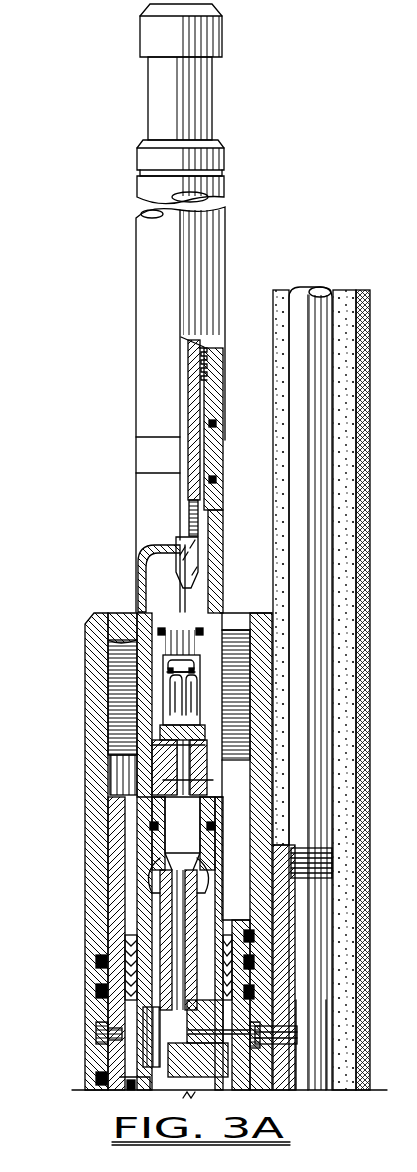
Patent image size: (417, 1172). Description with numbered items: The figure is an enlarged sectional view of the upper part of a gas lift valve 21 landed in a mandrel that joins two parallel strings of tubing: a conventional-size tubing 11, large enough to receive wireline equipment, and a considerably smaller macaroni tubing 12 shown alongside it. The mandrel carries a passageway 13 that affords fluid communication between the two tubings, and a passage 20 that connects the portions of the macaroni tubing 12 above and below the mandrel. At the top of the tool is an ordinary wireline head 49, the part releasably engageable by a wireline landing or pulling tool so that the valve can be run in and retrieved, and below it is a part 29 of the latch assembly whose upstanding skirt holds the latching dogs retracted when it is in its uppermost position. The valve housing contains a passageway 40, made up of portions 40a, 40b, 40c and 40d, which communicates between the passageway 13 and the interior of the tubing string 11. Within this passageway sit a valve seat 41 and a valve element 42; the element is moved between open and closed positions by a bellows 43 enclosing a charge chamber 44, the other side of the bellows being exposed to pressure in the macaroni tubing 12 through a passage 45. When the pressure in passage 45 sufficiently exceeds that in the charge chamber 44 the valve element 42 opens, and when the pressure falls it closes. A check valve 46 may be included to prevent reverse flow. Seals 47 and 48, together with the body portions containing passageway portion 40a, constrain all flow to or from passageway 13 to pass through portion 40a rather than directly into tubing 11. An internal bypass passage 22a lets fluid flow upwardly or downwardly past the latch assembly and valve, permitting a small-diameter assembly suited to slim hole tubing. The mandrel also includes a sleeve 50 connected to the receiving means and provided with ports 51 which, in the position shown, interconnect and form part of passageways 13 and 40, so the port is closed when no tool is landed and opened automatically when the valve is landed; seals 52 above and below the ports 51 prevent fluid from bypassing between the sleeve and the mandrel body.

The wireline head 49 is at (162, 79).
The gas lift valve 21 is at (130, 518).
The charge chamber 44 is at (203, 362).
The bellows 43 is at (200, 378).
The passage 45 is at (194, 400).
The valve element 42 is at (172, 596).
The valve seat 41 is at (150, 610).
The tubing 11 is at (95, 832).
The passageway portion 40b is at (98, 616).
The passageway portion 40c is at (110, 654).
The passageway portion 40d is at (178, 748).
The check valve 46 is at (172, 697).
The passageway 40 is at (172, 818).
The bypass passage 22a is at (150, 884).
The passageway portion 40a is at (178, 902).
The seal 47 is at (120, 942).
The seals 52 is at (96, 961).
The sleeve 50 is at (100, 988).
The ports 51 is at (100, 1034).
The seal 48 is at (130, 1090).
The part 29 is at (416, 386).
The macaroni tubing 12 is at (318, 745).
The passageway 13 is at (290, 1030).
The passage 20 is at (307, 1073).